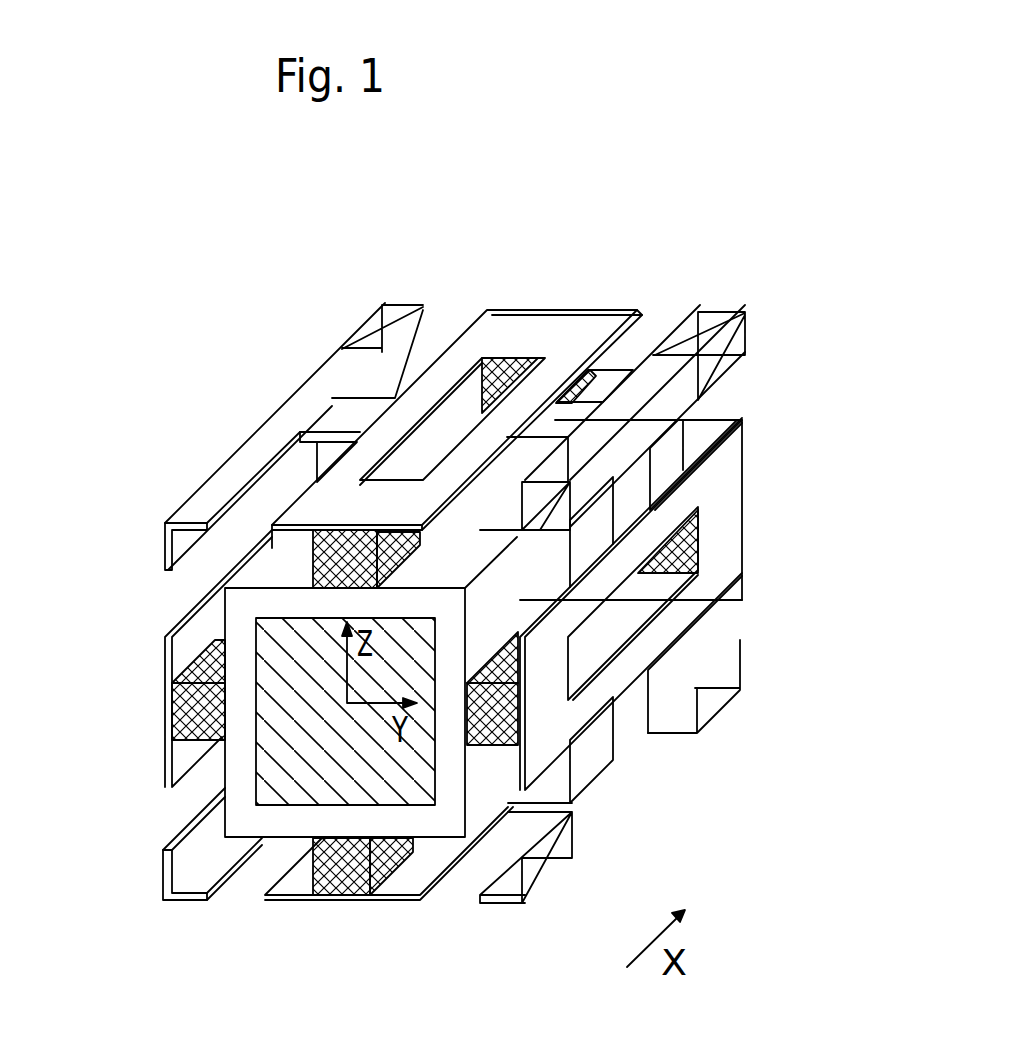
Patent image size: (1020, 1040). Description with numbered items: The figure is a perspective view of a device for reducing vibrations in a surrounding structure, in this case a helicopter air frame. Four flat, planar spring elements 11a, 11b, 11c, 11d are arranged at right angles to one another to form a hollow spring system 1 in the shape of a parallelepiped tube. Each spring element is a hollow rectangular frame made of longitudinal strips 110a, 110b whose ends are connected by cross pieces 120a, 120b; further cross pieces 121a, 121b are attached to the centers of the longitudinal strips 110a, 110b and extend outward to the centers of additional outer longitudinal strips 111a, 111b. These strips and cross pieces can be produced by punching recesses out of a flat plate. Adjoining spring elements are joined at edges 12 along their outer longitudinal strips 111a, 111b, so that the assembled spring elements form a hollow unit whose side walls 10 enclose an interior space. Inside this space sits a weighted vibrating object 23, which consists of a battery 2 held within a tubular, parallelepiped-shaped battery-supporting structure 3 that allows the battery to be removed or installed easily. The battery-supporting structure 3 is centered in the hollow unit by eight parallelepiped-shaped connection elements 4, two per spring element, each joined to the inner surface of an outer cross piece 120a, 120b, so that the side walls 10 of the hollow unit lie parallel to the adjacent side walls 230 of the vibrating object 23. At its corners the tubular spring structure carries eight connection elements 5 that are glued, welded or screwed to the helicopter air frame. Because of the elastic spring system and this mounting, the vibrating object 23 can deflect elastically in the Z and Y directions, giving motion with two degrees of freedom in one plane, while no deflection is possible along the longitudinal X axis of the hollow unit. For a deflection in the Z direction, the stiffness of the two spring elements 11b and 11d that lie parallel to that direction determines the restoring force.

The hollow spring system 1 is at (240, 377).
The battery 2 is at (297, 785).
The battery-supporting structure 3 is at (320, 818).
The connection element 4 is at (310, 530).
The connection element 5 is at (388, 313).
The side wall 10 is at (703, 603).
The spring element 11a is at (495, 354).
The spring element 11b is at (671, 601).
The spring element 11c is at (415, 873).
The spring element 11d is at (182, 645).
The edge 12 is at (700, 386).
The vibrating object 23 is at (215, 787).
The side wall 230 is at (640, 833).
The longitudinal strip 110a is at (443, 347).
The longitudinal strip 110b is at (560, 322).
The longitudinal strip 111a is at (328, 372).
The longitudinal strip 111b is at (655, 385).
The cross piece 120a is at (525, 343).
The cross piece 120b is at (373, 503).
The cross piece 121a is at (332, 423).
The cross piece 121b is at (743, 421).